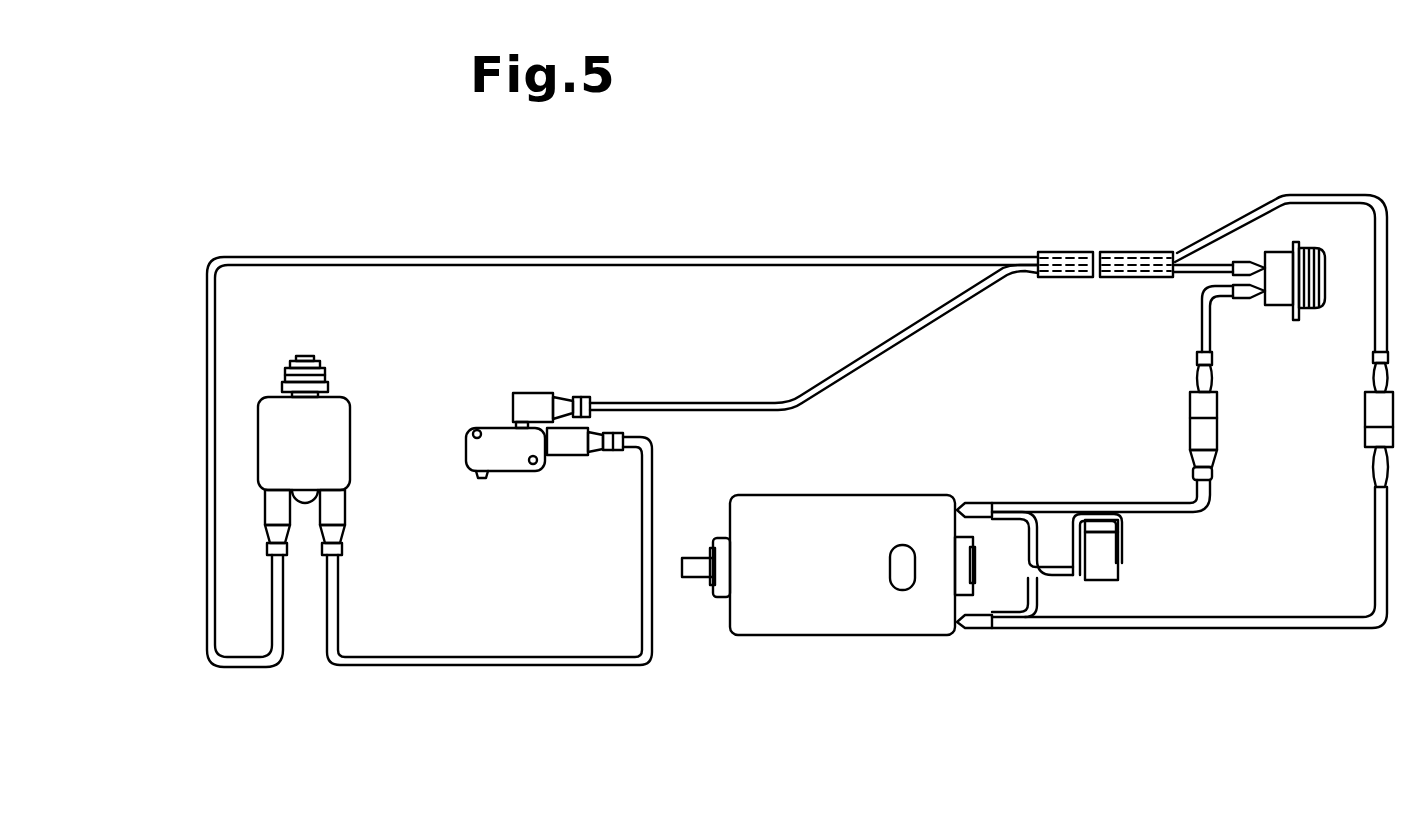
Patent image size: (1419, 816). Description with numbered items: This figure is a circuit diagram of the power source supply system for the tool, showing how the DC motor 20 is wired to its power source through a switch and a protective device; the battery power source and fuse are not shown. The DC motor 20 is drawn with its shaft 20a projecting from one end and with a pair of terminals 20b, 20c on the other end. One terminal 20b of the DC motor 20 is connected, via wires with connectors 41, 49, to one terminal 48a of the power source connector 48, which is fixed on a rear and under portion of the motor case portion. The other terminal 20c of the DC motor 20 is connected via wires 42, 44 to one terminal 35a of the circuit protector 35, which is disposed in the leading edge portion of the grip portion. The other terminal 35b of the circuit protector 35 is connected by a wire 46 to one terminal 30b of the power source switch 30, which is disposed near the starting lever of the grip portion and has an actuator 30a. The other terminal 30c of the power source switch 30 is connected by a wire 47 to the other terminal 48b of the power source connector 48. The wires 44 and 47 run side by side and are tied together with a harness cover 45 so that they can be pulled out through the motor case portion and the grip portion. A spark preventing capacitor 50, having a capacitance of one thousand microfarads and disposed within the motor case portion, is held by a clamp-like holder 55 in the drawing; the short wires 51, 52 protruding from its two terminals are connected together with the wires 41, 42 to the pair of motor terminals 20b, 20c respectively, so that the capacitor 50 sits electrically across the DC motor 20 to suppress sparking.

The DC motor 20 is at (807, 607).
The motor shaft 20a is at (697, 570).
The terminal of the DC motor 20b is at (963, 500).
The terminal of the DC motor 20c is at (965, 638).
The power source switch 30 is at (507, 453).
The switch actuator 30a is at (478, 478).
The terminal of the power source switch 30b is at (552, 443).
The terminal of the power switch 30c is at (512, 398).
The circuit protector 35 is at (335, 420).
The terminal of the circuit protector 35a is at (263, 520).
The terminal of the circuit protector 35b is at (337, 510).
The wire with connector 41 is at (1138, 500).
The wire 42 is at (1230, 628).
The wire 44 is at (923, 255).
The harness cover 45 is at (1067, 250).
The wire 46 is at (510, 660).
The wire 47 is at (923, 325).
The power source connector 48 is at (1283, 305).
The terminal of the power source connector 48a is at (1250, 300).
The terminal of the power source connector 48b is at (1258, 283).
The wire with connector 49 is at (1200, 327).
The spark preventing capacitor 50 is at (1118, 577).
The wire 51 is at (1042, 525).
The wire 52 is at (1037, 593).
The holder 55 is at (1126, 543).